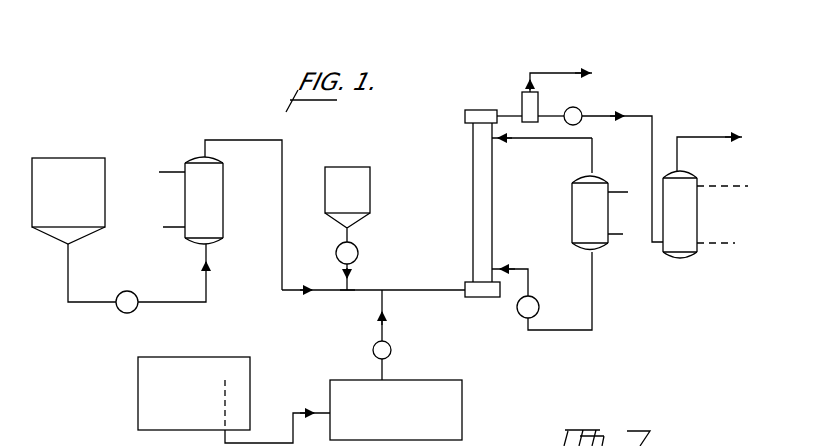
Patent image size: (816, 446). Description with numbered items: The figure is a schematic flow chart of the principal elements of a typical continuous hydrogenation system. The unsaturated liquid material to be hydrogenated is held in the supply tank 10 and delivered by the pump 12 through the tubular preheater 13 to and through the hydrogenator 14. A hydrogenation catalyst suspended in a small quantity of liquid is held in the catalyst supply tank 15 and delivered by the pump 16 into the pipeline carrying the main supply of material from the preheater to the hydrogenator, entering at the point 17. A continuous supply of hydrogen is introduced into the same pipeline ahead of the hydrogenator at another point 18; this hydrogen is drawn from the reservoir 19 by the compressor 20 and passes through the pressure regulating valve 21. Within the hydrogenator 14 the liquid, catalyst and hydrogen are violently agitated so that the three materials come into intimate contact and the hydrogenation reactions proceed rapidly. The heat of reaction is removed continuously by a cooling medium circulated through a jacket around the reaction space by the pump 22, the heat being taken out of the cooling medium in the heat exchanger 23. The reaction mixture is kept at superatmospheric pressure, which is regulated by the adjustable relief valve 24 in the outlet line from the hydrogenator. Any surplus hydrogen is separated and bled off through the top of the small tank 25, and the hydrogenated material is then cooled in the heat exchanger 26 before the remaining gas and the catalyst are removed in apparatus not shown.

The supply tank 10 is at (103, 170).
The pump 12 is at (133, 282).
The tubular preheater 13 is at (223, 210).
The hydrogenator 14 is at (472, 222).
The catalyst supply tank 15 is at (325, 196).
The pump 16 is at (358, 253).
The point 17 is at (345, 291).
The point 18 is at (383, 292).
The hydrogen reservoir 19 is at (145, 410).
The compressor 20 is at (462, 375).
The pressure regulating valve 21 is at (391, 348).
The pump 22 is at (548, 299).
The heat exchanger 23 is at (597, 234).
The adjustable relief valve 24 is at (578, 109).
The small tank 25 is at (521, 99).
The heat exchanger 26 is at (688, 217).